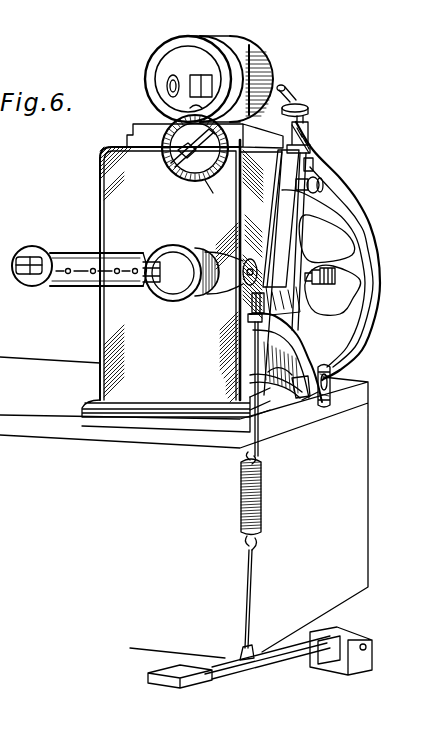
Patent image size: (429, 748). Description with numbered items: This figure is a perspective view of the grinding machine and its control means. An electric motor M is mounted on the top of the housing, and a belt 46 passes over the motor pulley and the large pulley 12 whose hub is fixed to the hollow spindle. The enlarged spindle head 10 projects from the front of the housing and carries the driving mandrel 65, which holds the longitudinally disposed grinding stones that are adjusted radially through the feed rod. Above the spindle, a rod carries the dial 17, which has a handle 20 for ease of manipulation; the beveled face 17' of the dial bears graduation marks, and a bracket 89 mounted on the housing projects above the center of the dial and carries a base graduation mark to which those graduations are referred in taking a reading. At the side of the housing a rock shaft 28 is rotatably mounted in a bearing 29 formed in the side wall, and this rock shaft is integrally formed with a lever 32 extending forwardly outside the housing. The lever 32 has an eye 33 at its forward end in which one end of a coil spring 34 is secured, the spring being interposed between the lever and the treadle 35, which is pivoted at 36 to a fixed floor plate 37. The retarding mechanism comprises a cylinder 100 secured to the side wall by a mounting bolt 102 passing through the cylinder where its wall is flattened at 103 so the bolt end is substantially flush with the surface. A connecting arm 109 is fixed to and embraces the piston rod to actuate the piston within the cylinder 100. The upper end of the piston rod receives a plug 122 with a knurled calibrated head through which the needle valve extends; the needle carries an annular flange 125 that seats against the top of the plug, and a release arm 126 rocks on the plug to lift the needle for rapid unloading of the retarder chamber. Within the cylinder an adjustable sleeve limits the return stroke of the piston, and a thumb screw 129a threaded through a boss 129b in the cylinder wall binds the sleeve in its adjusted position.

The electric motor M is at (247, 56).
The bracket 89 is at (192, 107).
The handle 20 is at (158, 125).
The dial 17 is at (182, 154).
The beveled face 17' is at (190, 197).
The spindle head 10 is at (193, 244).
The driving mandrel 65 is at (20, 278).
The cylinder 100 is at (269, 216).
The flattened surface 103 is at (244, 302).
The eye 33 is at (247, 333).
The lever 32 is at (292, 339).
The bearing 29 is at (303, 392).
The rock shaft 28 is at (330, 397).
The coil spring 34 is at (262, 494).
The treadle 35 is at (197, 682).
The pivot 36 is at (366, 646).
The floor plate 37 is at (368, 665).
The pulley 12 is at (368, 306).
The belt 46 is at (366, 226).
The mounting bolt 102 is at (310, 287).
The release arm 126 is at (286, 98).
The annular flange 125 is at (306, 108).
The plug 122 is at (311, 128).
The connecting arm 109 is at (316, 144).
The boss 129b is at (314, 170).
The thumb screw 129a is at (324, 184).